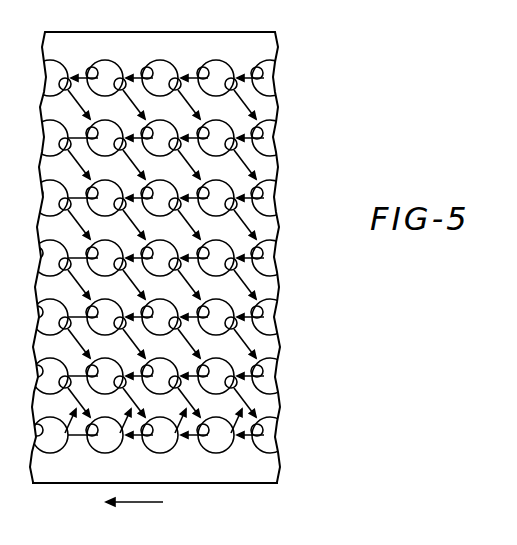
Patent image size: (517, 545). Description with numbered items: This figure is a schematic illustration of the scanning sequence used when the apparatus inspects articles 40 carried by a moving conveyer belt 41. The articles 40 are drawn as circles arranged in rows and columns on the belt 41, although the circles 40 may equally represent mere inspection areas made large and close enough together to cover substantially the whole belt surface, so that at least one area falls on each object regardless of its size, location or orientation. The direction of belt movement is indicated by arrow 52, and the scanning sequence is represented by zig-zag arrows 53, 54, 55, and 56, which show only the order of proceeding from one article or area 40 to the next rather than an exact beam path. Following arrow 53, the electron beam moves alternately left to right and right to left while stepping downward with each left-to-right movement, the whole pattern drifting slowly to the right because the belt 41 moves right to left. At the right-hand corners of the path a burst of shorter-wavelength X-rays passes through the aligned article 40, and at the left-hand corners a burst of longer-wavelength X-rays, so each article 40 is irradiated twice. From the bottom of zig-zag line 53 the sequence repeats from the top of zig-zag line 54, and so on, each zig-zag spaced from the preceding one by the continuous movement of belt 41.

The articles 40 is at (214, 64).
The conveyer belt 41 is at (279, 476).
The arrow 52 is at (137, 502).
The zig-zag arrow 53 is at (77, 438).
The zig-zag arrow 54 is at (137, 437).
The zig-zag arrow 55 is at (193, 437).
The zig-zag arrow 56 is at (250, 437).